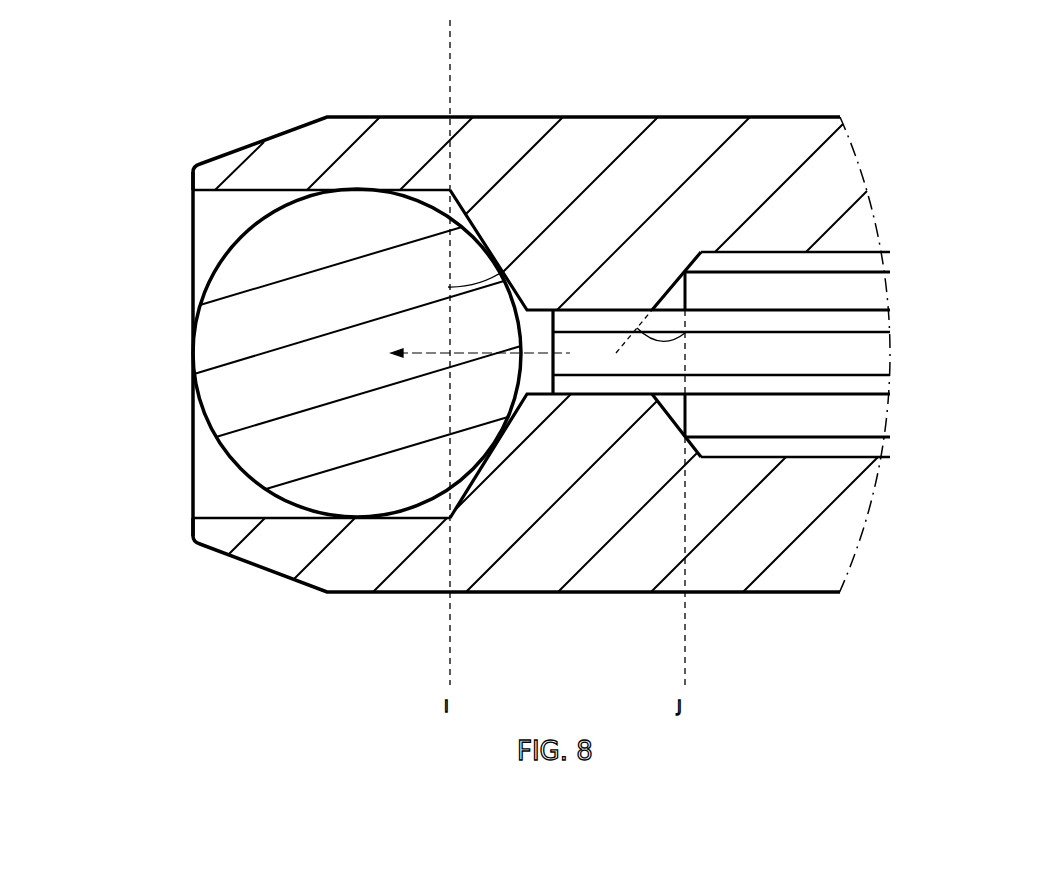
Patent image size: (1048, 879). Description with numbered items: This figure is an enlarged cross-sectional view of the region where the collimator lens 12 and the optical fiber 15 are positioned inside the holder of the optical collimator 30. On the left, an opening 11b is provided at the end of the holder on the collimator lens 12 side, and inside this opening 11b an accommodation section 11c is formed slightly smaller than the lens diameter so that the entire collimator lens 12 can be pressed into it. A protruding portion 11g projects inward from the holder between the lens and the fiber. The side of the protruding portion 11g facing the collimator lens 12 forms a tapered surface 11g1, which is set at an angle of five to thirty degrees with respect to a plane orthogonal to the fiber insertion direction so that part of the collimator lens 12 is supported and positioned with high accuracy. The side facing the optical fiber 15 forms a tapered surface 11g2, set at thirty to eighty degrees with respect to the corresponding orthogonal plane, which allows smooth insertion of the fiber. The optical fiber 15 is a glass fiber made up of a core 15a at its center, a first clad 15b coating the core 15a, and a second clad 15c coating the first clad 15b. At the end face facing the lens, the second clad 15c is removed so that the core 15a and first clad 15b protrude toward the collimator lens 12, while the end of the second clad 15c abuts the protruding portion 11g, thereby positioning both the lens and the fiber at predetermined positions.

The optical collimator 30 is at (172, 59).
The opening 11b is at (190, 240).
The accommodation section 11c is at (204, 490).
The protruding portion 11g is at (567, 183).
The tapered surface 11g1 is at (467, 242).
The tapered surface 11g2 is at (717, 240).
The collimator lens 12 is at (193, 345).
The optical fiber 15 is at (995, 276).
The core 15a is at (880, 357).
The first clad 15b is at (883, 323).
The second clad 15c is at (883, 293).